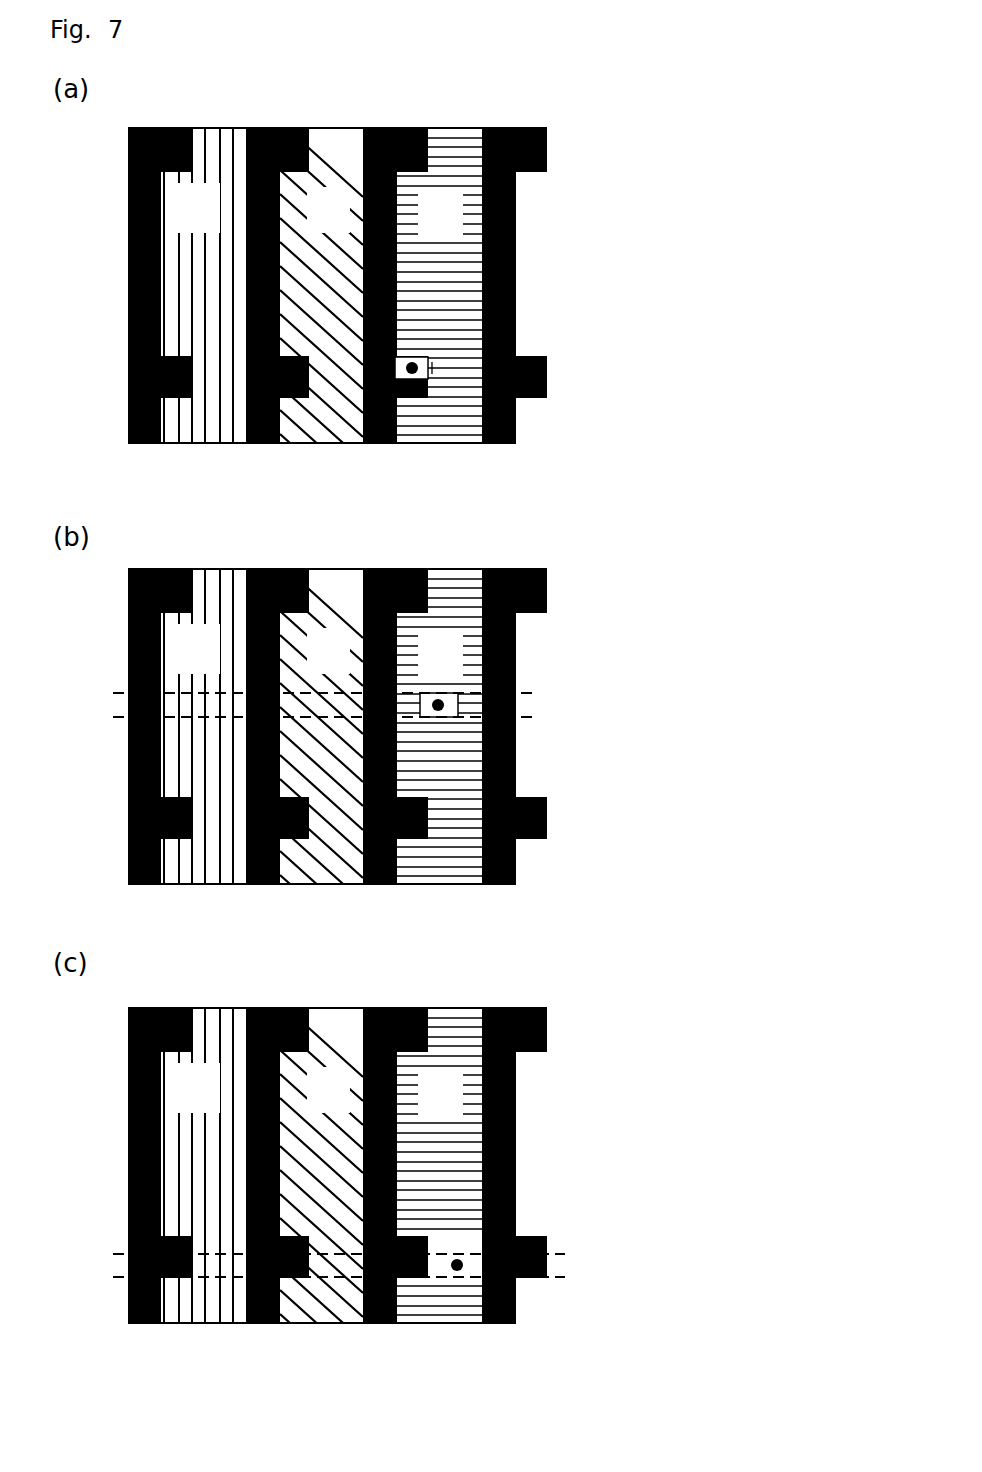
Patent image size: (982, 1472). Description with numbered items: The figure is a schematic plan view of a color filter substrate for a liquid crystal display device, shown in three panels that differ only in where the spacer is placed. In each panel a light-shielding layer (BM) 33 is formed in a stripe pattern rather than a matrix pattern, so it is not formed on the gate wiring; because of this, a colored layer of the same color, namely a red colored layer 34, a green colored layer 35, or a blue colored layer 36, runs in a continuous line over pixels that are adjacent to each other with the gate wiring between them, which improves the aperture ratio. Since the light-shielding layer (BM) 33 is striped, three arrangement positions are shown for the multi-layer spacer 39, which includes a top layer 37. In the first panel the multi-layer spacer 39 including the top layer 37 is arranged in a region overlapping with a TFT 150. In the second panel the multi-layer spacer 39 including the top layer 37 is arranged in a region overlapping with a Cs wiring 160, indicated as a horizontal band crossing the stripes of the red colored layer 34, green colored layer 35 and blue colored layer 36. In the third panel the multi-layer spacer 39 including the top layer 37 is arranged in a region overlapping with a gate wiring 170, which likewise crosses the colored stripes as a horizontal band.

The light-shielding layer (BM) 33 is at (508, 127).
The red colored layer 34 is at (207, 432).
The green colored layer 35 is at (328, 430).
The blue colored layer 36 is at (440, 430).
The top layer 37 is at (418, 353).
The multi-layer spacer 39 is at (423, 376).
The TFT 150 is at (433, 368).
The Cs wiring 160 is at (528, 703).
The gate wiring 170 is at (563, 1267).